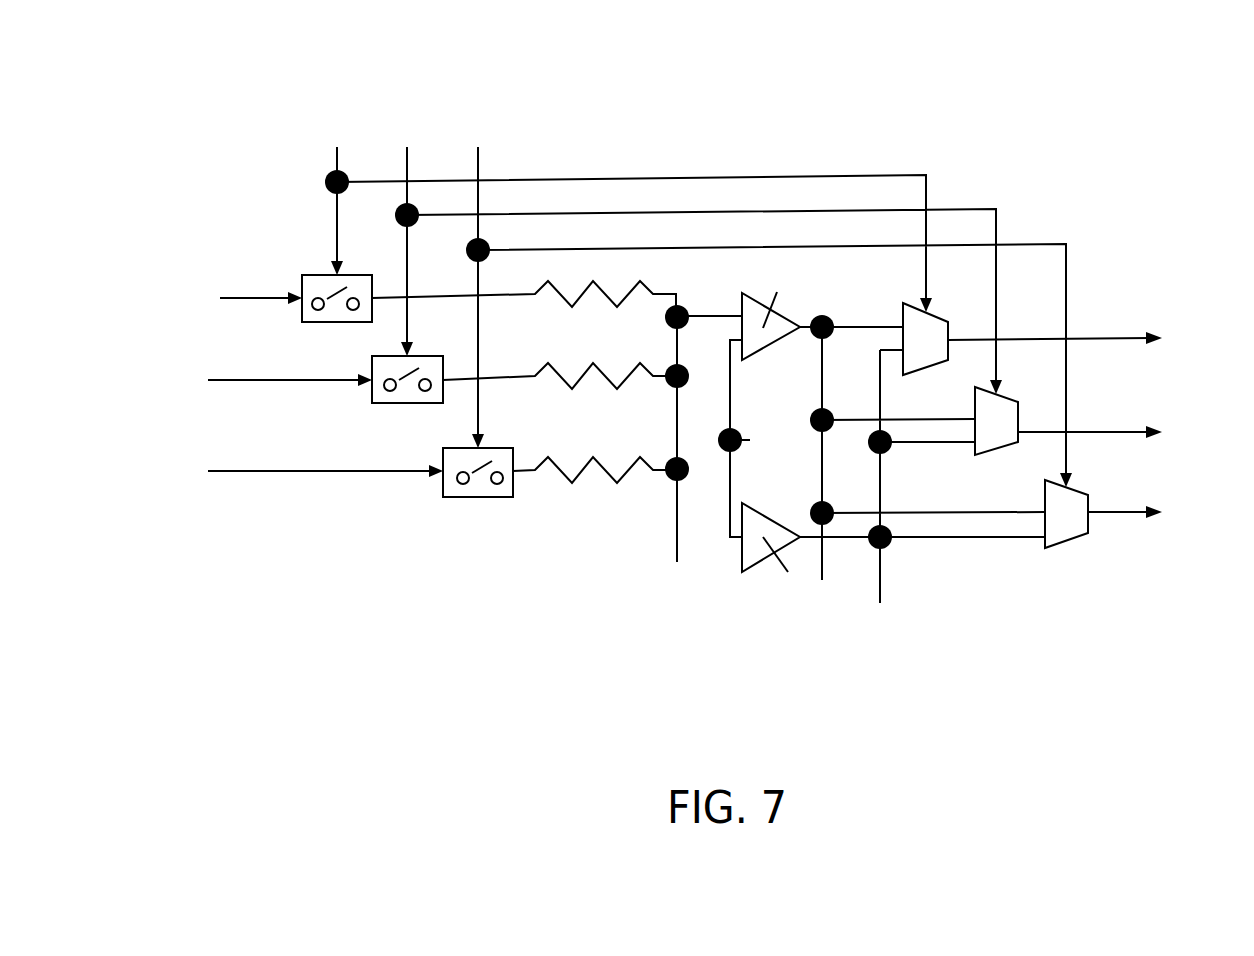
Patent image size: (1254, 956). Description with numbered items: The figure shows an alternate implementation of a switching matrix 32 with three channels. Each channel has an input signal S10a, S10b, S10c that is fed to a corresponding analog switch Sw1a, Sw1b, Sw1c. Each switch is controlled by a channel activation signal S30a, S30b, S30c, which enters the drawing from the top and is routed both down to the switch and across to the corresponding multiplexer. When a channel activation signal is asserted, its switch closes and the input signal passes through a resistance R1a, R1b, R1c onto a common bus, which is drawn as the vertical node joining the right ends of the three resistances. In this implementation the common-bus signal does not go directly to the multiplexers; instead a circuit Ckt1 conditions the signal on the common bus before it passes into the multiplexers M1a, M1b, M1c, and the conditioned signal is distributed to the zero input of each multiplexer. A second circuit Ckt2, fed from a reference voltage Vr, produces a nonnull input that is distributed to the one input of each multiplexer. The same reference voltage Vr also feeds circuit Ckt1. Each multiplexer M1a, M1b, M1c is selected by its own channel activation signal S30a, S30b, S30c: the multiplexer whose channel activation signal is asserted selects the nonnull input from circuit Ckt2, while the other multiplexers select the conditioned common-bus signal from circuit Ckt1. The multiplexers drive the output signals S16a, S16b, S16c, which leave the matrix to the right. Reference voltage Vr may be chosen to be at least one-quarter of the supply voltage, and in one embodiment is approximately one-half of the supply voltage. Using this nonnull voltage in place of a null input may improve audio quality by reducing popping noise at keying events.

The switching matrix 32 is at (1000, 138).
The channel activation signal S30a is at (313, 160).
The channel activation signal S30b is at (442, 100).
The channel activation signal S30c is at (525, 148).
The input signal S10a is at (277, 288).
The input signal S10b is at (333, 393).
The input signal S10c is at (380, 487).
The analog switch Sw1a is at (335, 313).
The analog switch Sw1b is at (408, 393).
The analog switch Sw1c is at (478, 487).
The resistance R1a is at (524, 309).
The resistance R1b is at (560, 390).
The resistance R1c is at (595, 483).
The circuit Ckt1 is at (790, 309).
The circuit Ckt2 is at (893, 555).
The reference voltage Vr is at (758, 438).
The multiplexer M1a is at (903, 310).
The multiplexer M1b is at (975, 407).
The multiplexer M1c is at (1045, 498).
The output signal S16a is at (1103, 325).
The output signal S16b is at (1103, 418).
The output signal S16c is at (1127, 527).